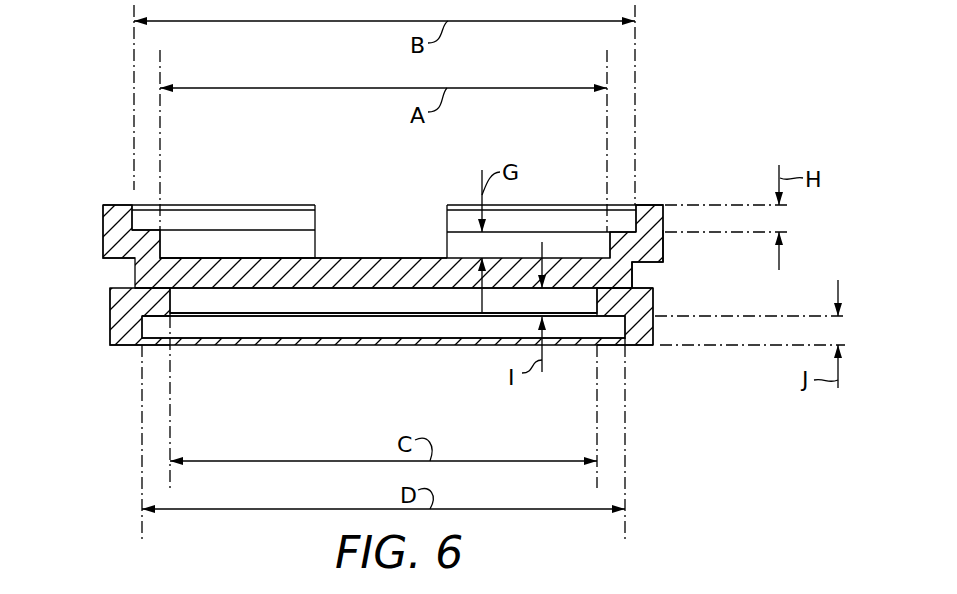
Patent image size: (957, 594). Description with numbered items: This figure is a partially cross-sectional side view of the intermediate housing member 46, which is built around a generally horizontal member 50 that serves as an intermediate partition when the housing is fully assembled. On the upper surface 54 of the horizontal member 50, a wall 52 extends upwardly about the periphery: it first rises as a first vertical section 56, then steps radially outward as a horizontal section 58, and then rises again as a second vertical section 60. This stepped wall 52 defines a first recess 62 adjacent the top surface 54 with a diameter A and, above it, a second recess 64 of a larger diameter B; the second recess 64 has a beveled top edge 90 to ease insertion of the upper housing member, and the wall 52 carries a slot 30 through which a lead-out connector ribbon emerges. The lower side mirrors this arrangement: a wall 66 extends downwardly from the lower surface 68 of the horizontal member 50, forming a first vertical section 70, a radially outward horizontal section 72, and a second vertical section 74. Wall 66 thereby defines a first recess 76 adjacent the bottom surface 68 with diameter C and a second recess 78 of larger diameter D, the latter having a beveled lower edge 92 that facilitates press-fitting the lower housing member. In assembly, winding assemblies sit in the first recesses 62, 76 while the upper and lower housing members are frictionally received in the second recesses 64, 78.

The slot 30 is at (316, 222).
The intermediate housing member 46 is at (668, 189).
The horizontal member 50 is at (372, 272).
The wall 52 is at (115, 215).
The upper surface 54 is at (412, 258).
The first vertical section 56 is at (610, 242).
The horizontal section 58 is at (663, 252).
The second vertical section 60 is at (663, 218).
The first recess 62 is at (177, 245).
The second recess 64 is at (147, 218).
The wall 66 is at (115, 347).
The lower surface 68 is at (443, 290).
The first vertical section 70 is at (632, 272).
The horizontal section 72 is at (653, 300).
The second vertical section 74 is at (653, 347).
The first recess 76 is at (205, 300).
The second recess 78 is at (172, 325).
The beveled top edge 90 is at (637, 204).
The beveled lower edge 92 is at (628, 346).